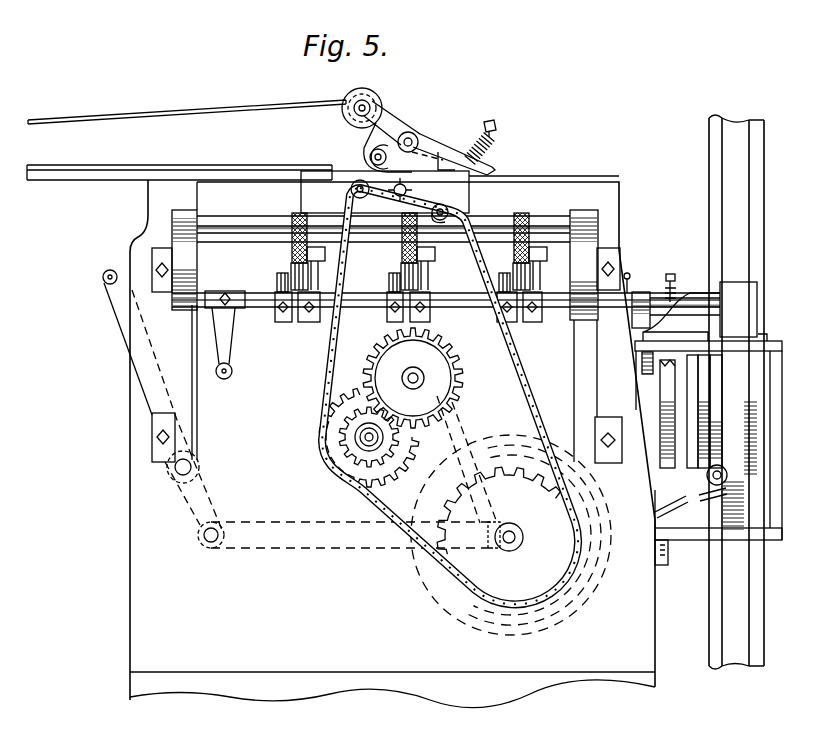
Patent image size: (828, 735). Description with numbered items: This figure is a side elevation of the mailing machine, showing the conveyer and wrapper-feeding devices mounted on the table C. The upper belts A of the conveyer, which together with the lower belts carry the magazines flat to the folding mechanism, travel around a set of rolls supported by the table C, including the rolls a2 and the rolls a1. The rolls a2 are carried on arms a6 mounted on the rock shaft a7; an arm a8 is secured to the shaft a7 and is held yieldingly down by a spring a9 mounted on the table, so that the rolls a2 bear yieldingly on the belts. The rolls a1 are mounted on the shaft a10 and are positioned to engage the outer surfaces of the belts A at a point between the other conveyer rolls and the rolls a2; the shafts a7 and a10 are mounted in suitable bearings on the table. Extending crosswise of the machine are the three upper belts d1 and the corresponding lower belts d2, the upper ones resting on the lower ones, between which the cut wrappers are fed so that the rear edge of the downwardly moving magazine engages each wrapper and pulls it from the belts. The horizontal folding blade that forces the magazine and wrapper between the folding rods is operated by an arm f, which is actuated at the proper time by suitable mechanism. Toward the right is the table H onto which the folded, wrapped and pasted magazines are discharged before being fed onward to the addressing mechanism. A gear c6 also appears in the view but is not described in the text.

The upper belts A is at (265, 105).
The table C is at (532, 183).
The table H is at (675, 345).
The rolls a1 is at (378, 137).
The rolls a2 is at (371, 100).
The arms a6 is at (388, 120).
The rock shaft a7 is at (413, 131).
The arm a8 is at (442, 155).
The spring a9 is at (491, 147).
The shaft a10 is at (370, 157).
The upper belts d1 is at (292, 213).
The lower belts d2 is at (304, 305).
The gear wheel c6 is at (416, 376).
The arm f is at (125, 321).